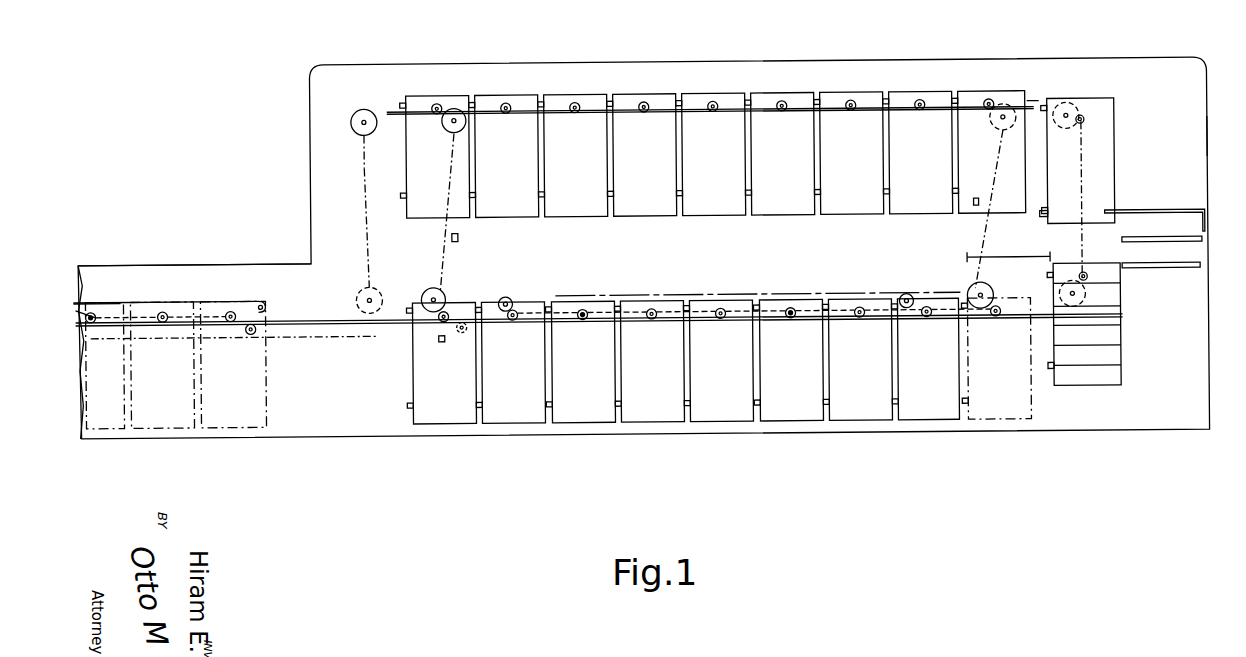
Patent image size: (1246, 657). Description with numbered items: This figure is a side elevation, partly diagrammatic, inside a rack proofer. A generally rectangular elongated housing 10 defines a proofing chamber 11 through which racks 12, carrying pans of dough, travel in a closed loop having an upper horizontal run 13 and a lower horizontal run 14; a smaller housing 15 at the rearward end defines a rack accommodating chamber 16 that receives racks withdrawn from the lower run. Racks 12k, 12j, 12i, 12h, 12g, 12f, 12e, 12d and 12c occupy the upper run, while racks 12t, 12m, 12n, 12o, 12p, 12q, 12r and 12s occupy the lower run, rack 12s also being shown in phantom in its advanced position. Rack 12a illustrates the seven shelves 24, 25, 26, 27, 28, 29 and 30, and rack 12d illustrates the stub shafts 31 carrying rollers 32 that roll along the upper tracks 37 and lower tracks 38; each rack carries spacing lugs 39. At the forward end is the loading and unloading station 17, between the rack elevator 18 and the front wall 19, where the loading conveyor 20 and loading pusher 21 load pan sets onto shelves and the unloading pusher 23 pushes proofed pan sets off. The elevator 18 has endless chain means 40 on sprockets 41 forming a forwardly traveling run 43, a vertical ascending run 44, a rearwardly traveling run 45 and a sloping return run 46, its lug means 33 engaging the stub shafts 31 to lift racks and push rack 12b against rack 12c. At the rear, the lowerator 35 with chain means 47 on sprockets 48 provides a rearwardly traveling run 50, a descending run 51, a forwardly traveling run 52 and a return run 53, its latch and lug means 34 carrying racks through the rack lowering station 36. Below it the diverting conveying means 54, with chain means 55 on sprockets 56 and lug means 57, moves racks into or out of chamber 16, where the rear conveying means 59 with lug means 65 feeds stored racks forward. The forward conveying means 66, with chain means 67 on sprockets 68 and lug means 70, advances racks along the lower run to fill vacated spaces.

The housing 10 is at (718, 61).
The proofing chamber 11 is at (599, 327).
The racks 12 is at (857, 92).
The rack 12a is at (1108, 337).
The rack 12b is at (1115, 142).
The rack 12c is at (962, 165).
The rack 12d is at (893, 165).
The rack 12e is at (824, 175).
The rack 12f is at (755, 175).
The rack 12g is at (686, 175).
The rack 12h is at (617, 175).
The rack 12i is at (548, 175).
The rack 12j is at (479, 175).
The rack 12k is at (410, 175).
The rack 12m is at (543, 380).
The rack 12n is at (612, 380).
The rack 12o is at (681, 380).
The rack 12p is at (750, 380).
The rack 12q is at (820, 380).
The rack 12r is at (890, 380).
The rack 12s is at (1030, 385).
The rack 12t is at (474, 380).
The upper horizontal run 13 is at (725, 123).
The lower horizontal run 14 is at (739, 283).
The housing 15 is at (172, 260).
The rack accommodating chamber 16 is at (226, 293).
The loading and unloading station 17 is at (1110, 253).
The rack elevator 18 is at (1078, 235).
The front wall 19 is at (1212, 130).
The loading conveyor 20 is at (1192, 242).
The loading pusher 21 is at (1204, 228).
The unloading pusher 23 is at (1014, 258).
The shelf 24 is at (1112, 279).
The shelf 25 is at (1112, 296).
The shelf 26 is at (1112, 317).
The shelf 27 is at (1112, 331).
The shelf 28 is at (1112, 350).
The shelf 29 is at (1112, 370).
The shelf 30 is at (1112, 388).
The stub shaft 31 is at (925, 100).
The roller 32 is at (918, 100).
The lug means 33 is at (1086, 124).
The latch and lug means 34 is at (458, 235).
The lowerator 35 is at (357, 200).
The rack lowering station 36 is at (388, 224).
The upper tracks 37 is at (585, 110).
The lower tracks 38 is at (775, 322).
The lugs 39 is at (1041, 215).
The endless chain means 40 is at (968, 278).
The sprockets 41 is at (986, 290).
The horizontal forwardly traveling run 43 is at (1028, 300).
The vertical ascending run 44 is at (1083, 186).
The horizontal rearwardly traveling run 45 is at (1035, 103).
The return run 46 is at (970, 246).
The endless chain means 47 is at (357, 163).
The sprockets 48 is at (366, 134).
The horizontal rearwardly traveling run 50 is at (383, 108).
The vertical descending run 51 is at (356, 262).
The horizontal forwardly traveling run 52 is at (384, 310).
The return run 53 is at (452, 260).
The diverting conveying means 54 is at (322, 335).
The endless chain means 55 is at (378, 335).
The sprockets 56 is at (254, 330).
The lug means 57 is at (441, 340).
The rear endless conveying means 59 is at (100, 296).
The lug means 65 is at (84, 308).
The forward conveying means 66 is at (588, 294).
The endless chain means 67 is at (753, 294).
The sprockets 68 is at (508, 296).
The lug means 70 is at (650, 316).